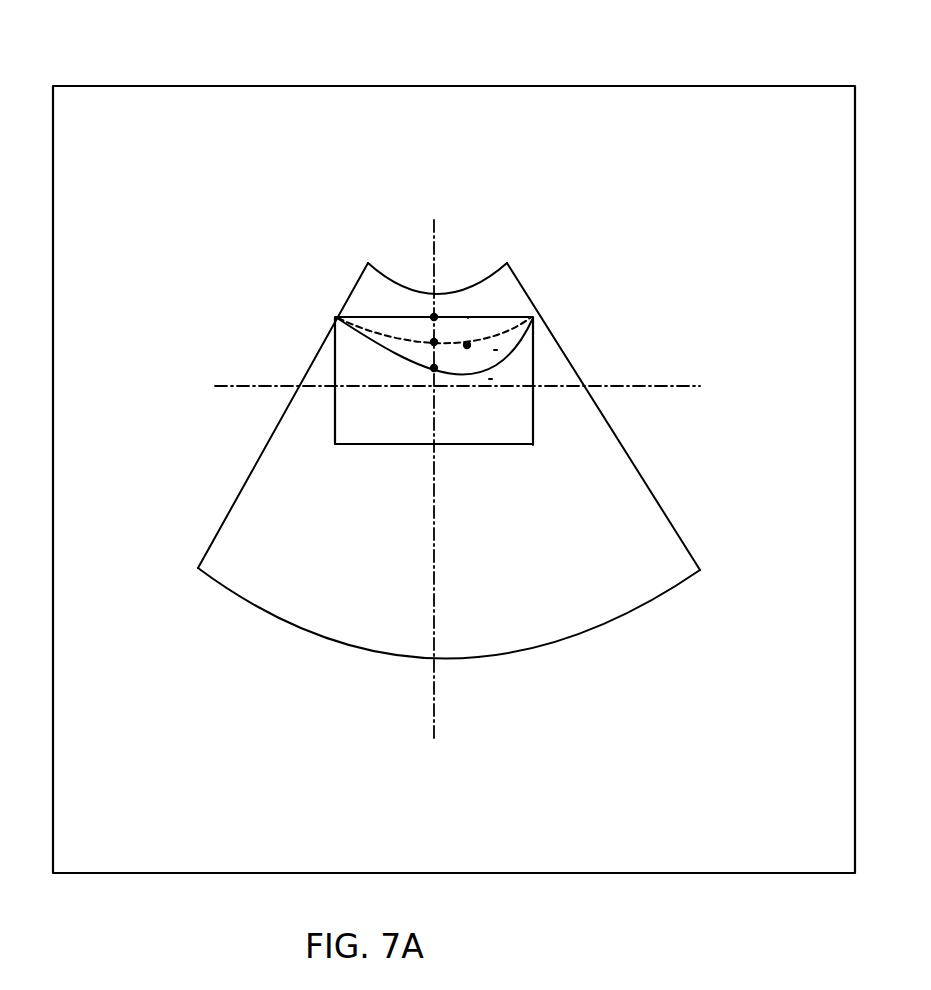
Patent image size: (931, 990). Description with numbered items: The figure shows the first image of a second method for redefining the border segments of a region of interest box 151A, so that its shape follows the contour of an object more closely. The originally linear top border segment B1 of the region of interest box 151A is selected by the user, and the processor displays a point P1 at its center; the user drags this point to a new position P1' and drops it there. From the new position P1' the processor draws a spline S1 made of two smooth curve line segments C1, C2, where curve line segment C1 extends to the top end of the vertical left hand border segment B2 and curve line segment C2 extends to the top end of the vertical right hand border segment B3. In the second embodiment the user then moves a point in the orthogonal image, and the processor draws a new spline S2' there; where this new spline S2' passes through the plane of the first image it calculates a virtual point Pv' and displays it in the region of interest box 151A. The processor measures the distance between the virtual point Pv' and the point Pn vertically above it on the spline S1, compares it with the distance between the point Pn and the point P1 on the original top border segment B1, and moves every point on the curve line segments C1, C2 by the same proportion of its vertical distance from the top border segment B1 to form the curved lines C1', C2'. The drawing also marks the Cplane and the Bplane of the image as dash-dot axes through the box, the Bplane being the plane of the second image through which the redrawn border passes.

The region of interest box 151A is at (113, 86).
The point P1 is at (310, 238).
The new position P1' is at (608, 293).
The top border segment B1 is at (468, 317).
The vertical left hand border segment B2 is at (335, 322).
The vertical right hand border segment B3 is at (533, 444).
The curve line segment C1 is at (293, 388).
The curve line segment C1' is at (266, 419).
The curve line segment C2 is at (576, 364).
The curve line segment C2' is at (607, 323).
The spline S1 is at (533, 386).
The new spline S2' is at (661, 462).
The point Pn is at (434, 317).
The virtual point Pv' is at (268, 457).
The C plane Cplane is at (523, 398).
The plane Bplane is at (469, 508).